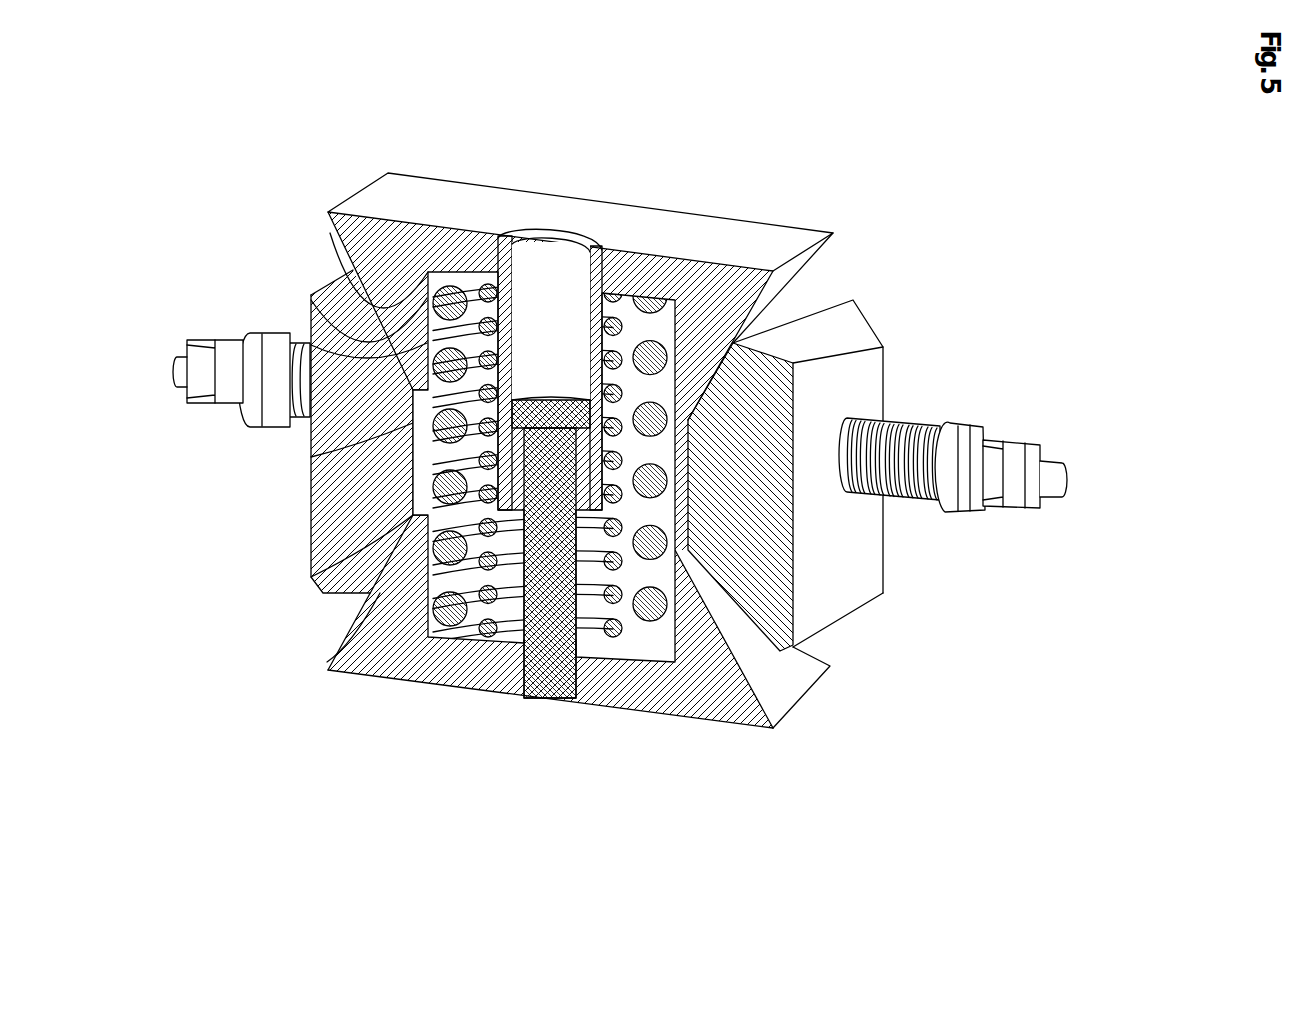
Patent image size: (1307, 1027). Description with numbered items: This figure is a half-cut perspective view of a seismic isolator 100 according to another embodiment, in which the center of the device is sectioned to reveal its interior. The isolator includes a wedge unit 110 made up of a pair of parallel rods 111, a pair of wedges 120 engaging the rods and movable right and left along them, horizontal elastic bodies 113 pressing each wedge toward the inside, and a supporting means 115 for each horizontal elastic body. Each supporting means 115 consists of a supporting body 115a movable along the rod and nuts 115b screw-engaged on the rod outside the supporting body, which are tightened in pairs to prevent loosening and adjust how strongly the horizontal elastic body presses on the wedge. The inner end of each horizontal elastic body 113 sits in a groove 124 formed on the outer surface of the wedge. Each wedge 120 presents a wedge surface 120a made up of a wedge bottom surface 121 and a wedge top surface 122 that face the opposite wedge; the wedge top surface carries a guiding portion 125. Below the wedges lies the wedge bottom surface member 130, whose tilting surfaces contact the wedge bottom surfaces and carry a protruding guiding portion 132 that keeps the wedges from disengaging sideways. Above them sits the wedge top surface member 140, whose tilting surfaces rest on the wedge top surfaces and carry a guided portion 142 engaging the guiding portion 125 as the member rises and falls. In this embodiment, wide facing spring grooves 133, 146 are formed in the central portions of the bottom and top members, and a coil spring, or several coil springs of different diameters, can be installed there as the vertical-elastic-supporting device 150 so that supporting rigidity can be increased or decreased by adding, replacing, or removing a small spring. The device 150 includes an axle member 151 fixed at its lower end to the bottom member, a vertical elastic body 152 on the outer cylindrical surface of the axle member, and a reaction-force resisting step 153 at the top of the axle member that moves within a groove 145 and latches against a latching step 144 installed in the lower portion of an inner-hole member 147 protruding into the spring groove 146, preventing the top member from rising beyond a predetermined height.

The seismic isolator 100 is at (208, 178).
The wedge unit 110 is at (990, 447).
The rod 111 is at (1061, 483).
The horizontal elastic body 113 is at (923, 424).
The supporting means 115 is at (1038, 483).
The supporting body 115a is at (980, 505).
The nut 115b is at (1000, 498).
The wedge 120 is at (572, 403).
The wedge surface 120a is at (657, 655).
The wedge bottom surface 121 is at (728, 720).
The wedge top surface 122 is at (708, 392).
The groove 124 is at (883, 495).
The guiding portion 125 is at (800, 330).
The wedge bottom surface member 130 is at (573, 656).
The guiding portion 132 is at (830, 668).
The spring groove 133 is at (328, 654).
The wedge top surface member 140 is at (572, 320).
The guided portion 142 is at (828, 259).
The latching step 144 is at (470, 606).
The groove 145 is at (582, 314).
The spring groove 146 is at (343, 247).
The inner-hole member 147 is at (440, 400).
The vertical-elastic-supporting device 150 is at (480, 586).
The axle member 151 is at (543, 683).
The vertical elastic body 152 is at (310, 298).
The reaction-force resisting step 153 is at (523, 410).